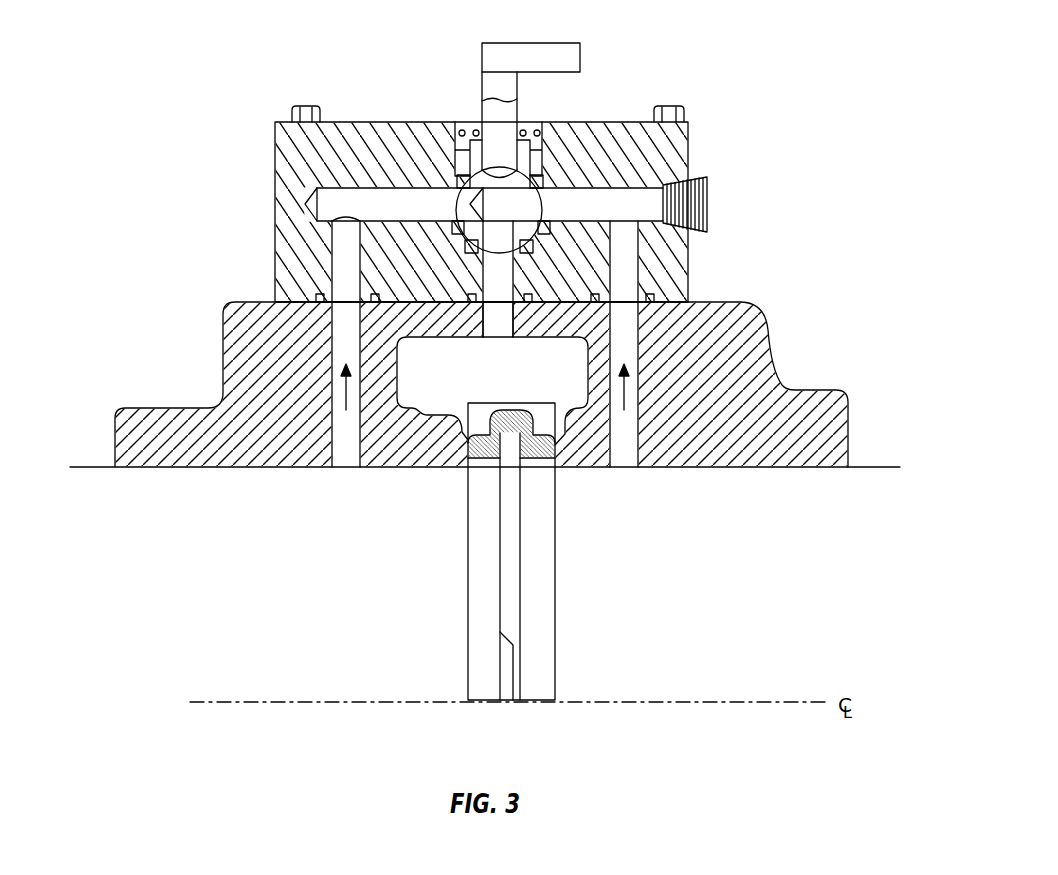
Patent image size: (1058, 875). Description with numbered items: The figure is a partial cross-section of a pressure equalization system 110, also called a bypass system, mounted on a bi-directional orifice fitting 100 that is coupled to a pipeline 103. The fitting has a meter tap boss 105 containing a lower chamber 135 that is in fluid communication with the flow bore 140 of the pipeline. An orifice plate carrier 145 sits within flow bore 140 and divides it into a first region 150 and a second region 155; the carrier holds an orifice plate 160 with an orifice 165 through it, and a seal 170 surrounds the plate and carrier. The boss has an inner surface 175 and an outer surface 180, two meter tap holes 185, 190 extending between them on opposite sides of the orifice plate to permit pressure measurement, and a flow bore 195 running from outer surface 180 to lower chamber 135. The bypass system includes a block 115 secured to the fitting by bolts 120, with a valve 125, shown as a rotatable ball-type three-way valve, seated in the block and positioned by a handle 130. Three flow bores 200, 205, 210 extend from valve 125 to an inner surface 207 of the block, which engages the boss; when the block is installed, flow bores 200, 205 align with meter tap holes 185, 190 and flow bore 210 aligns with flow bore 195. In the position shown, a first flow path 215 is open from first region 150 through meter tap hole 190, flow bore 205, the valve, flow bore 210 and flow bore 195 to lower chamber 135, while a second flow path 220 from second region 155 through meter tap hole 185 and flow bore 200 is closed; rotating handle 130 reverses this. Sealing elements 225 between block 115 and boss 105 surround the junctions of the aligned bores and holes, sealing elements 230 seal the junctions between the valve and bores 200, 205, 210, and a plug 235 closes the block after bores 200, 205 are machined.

The orifice fitting 100 is at (128, 378).
The pipeline 103 is at (855, 467).
The meter tap boss 105 is at (480, 385).
The pressure equalization system 110 is at (246, 170).
The block 115 is at (690, 152).
The bolt 120 is at (668, 108).
The valve 125 is at (544, 159).
The handle 130 is at (558, 43).
The lower chamber 135 is at (492, 391).
The flow bore 140 is at (293, 660).
The orifice plate carrier 145 is at (556, 522).
The first region 150 is at (718, 597).
The second region 155 is at (290, 553).
The orifice plate 160 is at (512, 568).
The orifice 165 is at (530, 671).
The seal 170 is at (486, 462).
The inner surface 175 is at (203, 467).
The outer surface 180 is at (440, 300).
The meter tap hole 185 is at (352, 467).
The meter tap hole 190 is at (622, 467).
The flow bore 195 is at (512, 335).
The flow bore 200 is at (350, 250).
The flow bore 205 is at (628, 255).
The inner surface 207 is at (280, 312).
The flow bore 210 is at (505, 282).
The first flow path 215 is at (612, 392).
The second flow path 220 is at (392, 372).
The sealing element 225 is at (378, 296).
The sealing element 230 is at (460, 178).
The plug 235 is at (708, 203).